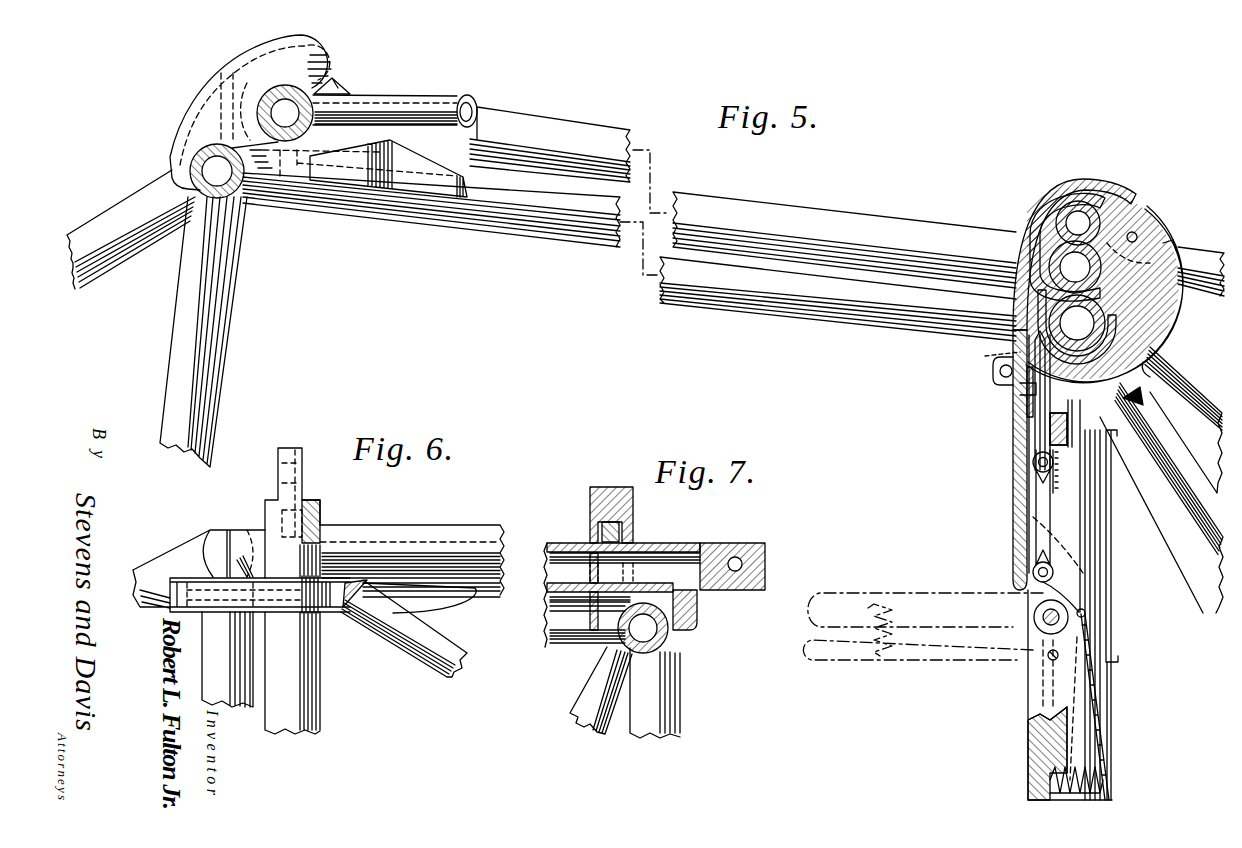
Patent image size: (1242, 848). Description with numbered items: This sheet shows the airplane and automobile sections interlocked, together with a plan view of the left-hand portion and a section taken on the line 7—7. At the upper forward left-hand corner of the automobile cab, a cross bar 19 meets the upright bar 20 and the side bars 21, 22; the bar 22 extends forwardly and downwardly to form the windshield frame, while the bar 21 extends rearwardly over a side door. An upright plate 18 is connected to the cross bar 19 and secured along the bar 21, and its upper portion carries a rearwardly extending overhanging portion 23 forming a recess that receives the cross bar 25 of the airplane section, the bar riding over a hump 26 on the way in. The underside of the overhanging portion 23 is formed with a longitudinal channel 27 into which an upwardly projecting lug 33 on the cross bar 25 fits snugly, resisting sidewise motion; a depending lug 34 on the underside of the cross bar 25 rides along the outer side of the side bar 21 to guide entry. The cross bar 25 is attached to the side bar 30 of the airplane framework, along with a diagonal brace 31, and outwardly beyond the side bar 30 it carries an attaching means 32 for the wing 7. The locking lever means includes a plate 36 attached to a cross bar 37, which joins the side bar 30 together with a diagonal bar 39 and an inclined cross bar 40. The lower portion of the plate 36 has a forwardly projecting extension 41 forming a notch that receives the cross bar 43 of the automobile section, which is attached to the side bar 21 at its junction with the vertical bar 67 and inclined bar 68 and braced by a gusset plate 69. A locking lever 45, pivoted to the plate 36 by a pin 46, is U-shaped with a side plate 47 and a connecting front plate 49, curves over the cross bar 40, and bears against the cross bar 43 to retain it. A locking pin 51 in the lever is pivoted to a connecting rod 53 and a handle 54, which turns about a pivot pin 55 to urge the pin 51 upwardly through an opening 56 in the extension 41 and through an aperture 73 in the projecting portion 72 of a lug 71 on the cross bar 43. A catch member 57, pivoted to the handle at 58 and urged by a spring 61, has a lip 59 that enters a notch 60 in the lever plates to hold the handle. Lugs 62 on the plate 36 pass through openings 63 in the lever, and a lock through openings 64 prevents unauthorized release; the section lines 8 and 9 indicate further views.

In FIG. 5, the wing 7 is at (276, 237).
In FIG. 5, the section line 8- 8 is at (922, 357).
In FIG. 5, the section line 9- 9 is at (1147, 798).
In FIG. 5, the plate 18 is at (185, 122).
In FIG. 6, the plate 18 is at (172, 560).
In FIG. 7, the plate 18 is at (592, 500).
In FIG. 5, the cross bar 19 is at (218, 200).
In FIG. 6, the cross bar 19 is at (238, 708).
In FIG. 7, the cross bar 19 is at (552, 642).
In FIG. 5, the upright bar 20 is at (238, 318).
In FIG. 7, the upright bar 20 is at (682, 706).
In FIG. 5, the side bar 21 is at (885, 322).
In FIG. 6, the side bar 21 is at (490, 598).
In FIG. 7, the side bar 21 is at (670, 638).
In FIG. 5, the side bar 22 is at (150, 264).
In FIG. 6, the side bar 22 is at (183, 536).
In FIG. 7, the side bar 22 is at (596, 687).
In FIG. 5, the overhanging portion 23 is at (334, 53).
In FIG. 5, the cross bar 25 is at (318, 92).
In FIG. 6, the cross bar 25 is at (322, 692).
In FIG. 7, the cross bar 25 is at (680, 543).
In FIG. 5, the hump 26 is at (396, 134).
In FIG. 6, the hump 26 is at (453, 602).
In FIG. 7, the channel 27 is at (594, 532).
In FIG. 5, the side bar 30 is at (912, 225).
In FIG. 6, the side bar 30 is at (478, 527).
In FIG. 7, the side bar 30 is at (622, 595).
In FIG. 5, the diagonal brace 31 is at (460, 96).
In FIG. 6, the diagonal brace 31 is at (422, 667).
In FIG. 6, the attaching means 32 is at (280, 464).
In FIG. 7, the attaching means 32 is at (752, 543).
In FIG. 5, the lug 33 is at (345, 93).
In FIG. 6, the lug 33 is at (348, 583).
In FIG. 7, the lug 33 is at (624, 528).
In FIG. 6, the depending lug 34 is at (320, 510).
In FIG. 7, the depending lug 34 is at (699, 620).
In FIG. 5, the plate 36 is at (1157, 378).
In FIG. 5, the cross bar 37 is at (1052, 238).
In FIG. 5, the diagonal bar 39 is at (1197, 395).
In FIG. 5, the inclined cross bar 40 is at (1045, 212).
In FIG. 5, the forwardly projecting extension 41 is at (1052, 395).
In FIG. 5, the cross bar 43 is at (1038, 305).
In FIG. 5, the locking lever 45 is at (1066, 179).
In FIG. 5, the pin 46 is at (1140, 240).
In FIG. 5, the side plate 47 is at (1013, 418).
In FIG. 5, the front plate 49 is at (1016, 260).
In FIG. 5, the locking pin 51 is at (1027, 400).
In FIG. 5, the connecting rod 53 is at (1036, 500).
In FIG. 5, the handle 54 is at (1032, 690).
In FIG. 5, the pivot pin 55 is at (1038, 610).
In FIG. 5, the opening 56 is at (1020, 389).
In FIG. 5, the catch member 57 is at (1108, 698).
In FIG. 5, the pivot 58 is at (1048, 657).
In FIG. 5, the projecting lip 59 is at (1087, 612).
In FIG. 5, the notch 60 is at (1100, 572).
In FIG. 5, the spring 61 is at (1100, 778).
In FIG. 5, the lug 62 is at (995, 370).
In FIG. 5, the opening 63 is at (983, 354).
In FIG. 5, the opening 64 is at (1000, 378).
In FIG. 5, the vertical bar 67 is at (1097, 484).
In FIG. 5, the inclined bar 68 is at (1160, 605).
In FIG. 5, the gusset plate 69 is at (1112, 520).
In FIG. 5, the lug 71 is at (1127, 401).
In FIG. 5, the projecting portion 72 is at (1026, 332).
In FIG. 5, the aperture 73 is at (1039, 392).